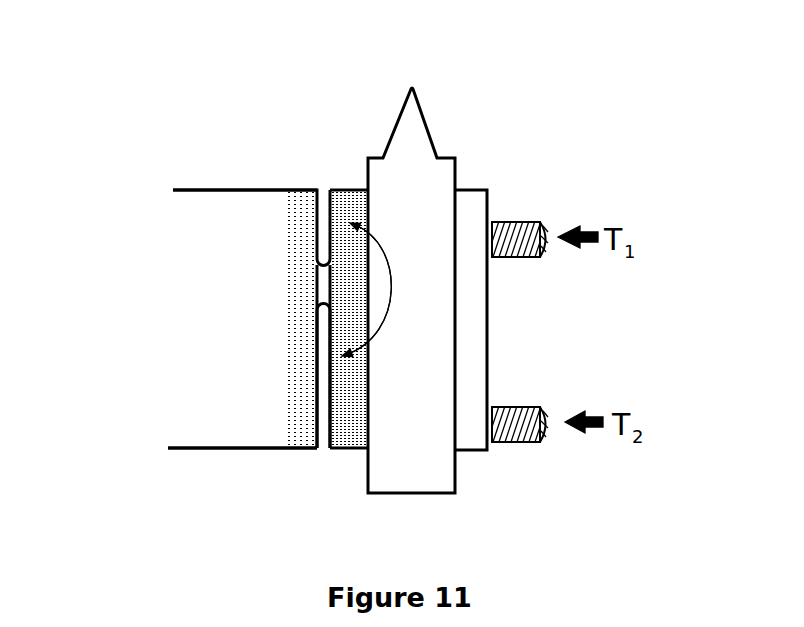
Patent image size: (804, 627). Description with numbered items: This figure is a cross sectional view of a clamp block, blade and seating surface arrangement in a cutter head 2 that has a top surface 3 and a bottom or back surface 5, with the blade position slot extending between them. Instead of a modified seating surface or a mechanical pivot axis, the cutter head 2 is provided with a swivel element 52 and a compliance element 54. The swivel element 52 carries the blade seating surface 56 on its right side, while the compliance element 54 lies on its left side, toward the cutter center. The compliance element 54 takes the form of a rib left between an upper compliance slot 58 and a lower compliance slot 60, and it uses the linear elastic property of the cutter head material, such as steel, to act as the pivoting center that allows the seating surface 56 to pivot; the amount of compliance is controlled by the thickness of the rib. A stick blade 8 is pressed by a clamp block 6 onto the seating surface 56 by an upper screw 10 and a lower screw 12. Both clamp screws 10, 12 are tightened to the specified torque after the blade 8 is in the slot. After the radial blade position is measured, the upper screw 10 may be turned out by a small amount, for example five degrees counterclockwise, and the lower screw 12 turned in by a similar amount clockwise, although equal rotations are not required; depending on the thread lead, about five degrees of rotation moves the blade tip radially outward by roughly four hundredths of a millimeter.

The cutter head 2 is at (212, 398).
The top surface 3 is at (189, 190).
The bottom surface 5 is at (253, 449).
The clamp block 6 is at (468, 222).
The stick blade 8 is at (426, 118).
The upper screw 10 is at (513, 259).
The lower screw 12 is at (517, 407).
The swivel element 52 is at (350, 215).
The compliance element 54 is at (328, 292).
The blade seating surface 56 is at (367, 420).
The upper compliance slot 58 is at (323, 198).
The lower compliance slot 60 is at (320, 449).